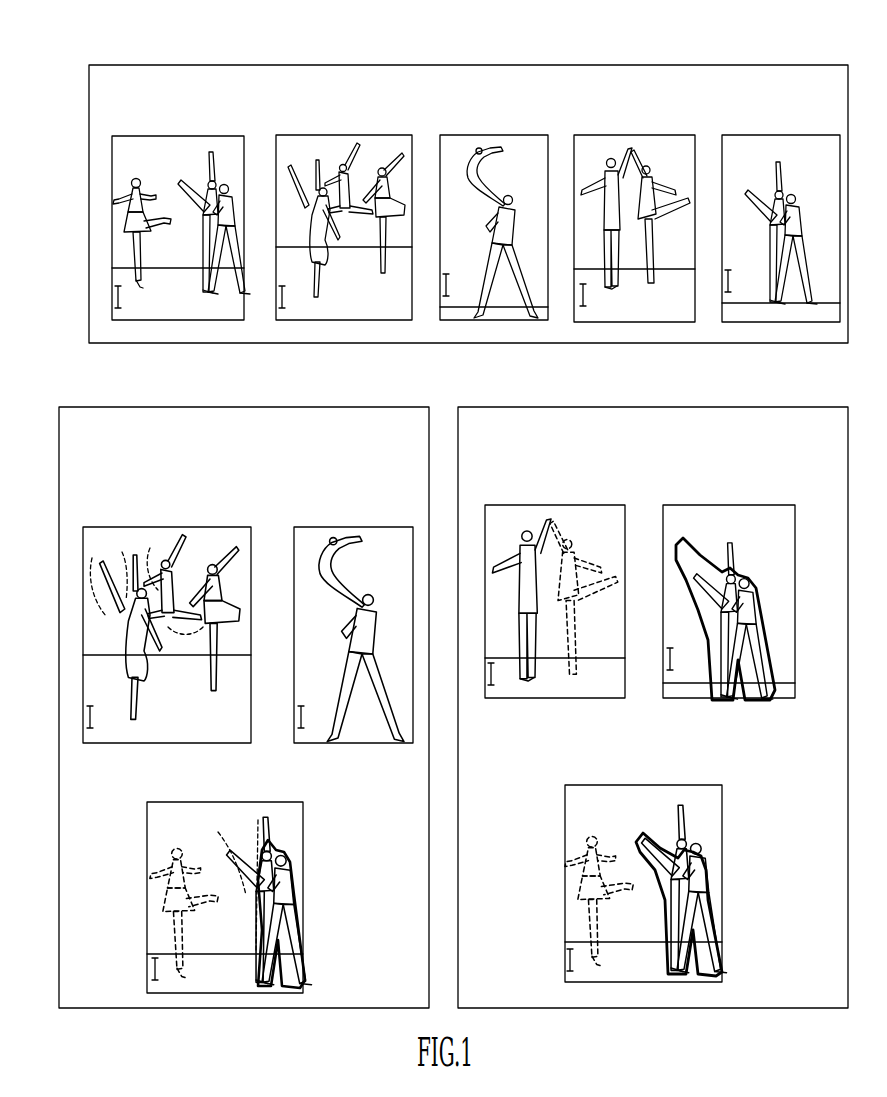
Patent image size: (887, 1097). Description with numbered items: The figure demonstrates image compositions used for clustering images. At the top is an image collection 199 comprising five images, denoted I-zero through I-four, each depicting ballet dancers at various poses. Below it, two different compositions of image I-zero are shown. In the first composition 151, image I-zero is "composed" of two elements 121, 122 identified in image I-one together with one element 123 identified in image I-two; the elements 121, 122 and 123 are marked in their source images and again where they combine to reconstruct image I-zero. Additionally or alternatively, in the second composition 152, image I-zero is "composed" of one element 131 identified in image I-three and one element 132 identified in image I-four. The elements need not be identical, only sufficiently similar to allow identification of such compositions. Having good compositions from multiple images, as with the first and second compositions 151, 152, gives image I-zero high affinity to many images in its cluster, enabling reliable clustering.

The image collection 199 is at (89, 118).
The first composition 151 is at (243, 689).
The second composition 152 is at (653, 690).
The element 121 is at (117, 573).
The element 122 is at (157, 567).
The element 123 is at (388, 653).
The element 131 is at (575, 545).
The element 132 is at (700, 567).